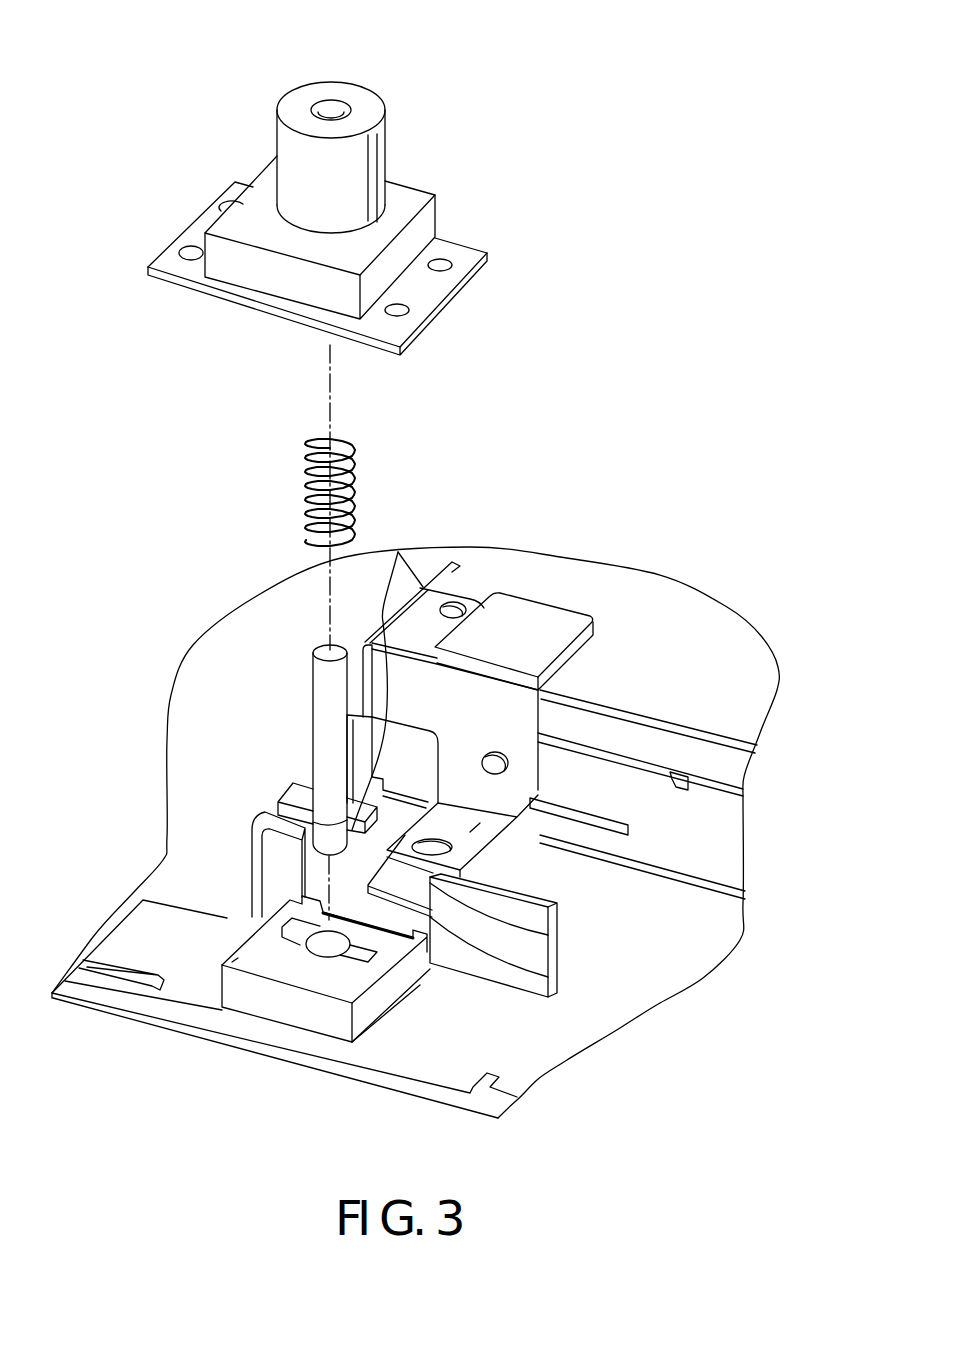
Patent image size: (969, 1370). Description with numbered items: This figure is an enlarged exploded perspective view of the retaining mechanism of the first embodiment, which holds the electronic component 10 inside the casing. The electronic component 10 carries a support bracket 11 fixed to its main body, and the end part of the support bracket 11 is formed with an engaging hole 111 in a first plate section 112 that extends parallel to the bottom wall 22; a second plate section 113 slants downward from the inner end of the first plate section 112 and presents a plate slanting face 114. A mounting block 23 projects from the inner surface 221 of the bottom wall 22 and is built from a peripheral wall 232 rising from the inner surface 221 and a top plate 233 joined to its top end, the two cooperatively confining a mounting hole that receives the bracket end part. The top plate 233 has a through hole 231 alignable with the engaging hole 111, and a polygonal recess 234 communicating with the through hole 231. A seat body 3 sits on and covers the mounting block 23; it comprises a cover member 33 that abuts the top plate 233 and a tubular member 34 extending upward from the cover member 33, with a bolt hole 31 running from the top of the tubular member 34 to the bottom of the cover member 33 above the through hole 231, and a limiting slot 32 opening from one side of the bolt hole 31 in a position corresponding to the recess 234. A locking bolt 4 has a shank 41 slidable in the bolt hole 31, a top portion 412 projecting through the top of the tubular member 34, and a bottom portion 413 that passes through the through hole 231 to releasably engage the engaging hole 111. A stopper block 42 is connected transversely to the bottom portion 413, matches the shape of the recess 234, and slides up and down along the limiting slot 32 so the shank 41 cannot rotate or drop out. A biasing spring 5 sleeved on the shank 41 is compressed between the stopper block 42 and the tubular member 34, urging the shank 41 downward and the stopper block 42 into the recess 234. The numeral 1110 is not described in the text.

The seat body 3 is at (410, 110).
The bolt hole 31 is at (333, 100).
The limiting slot 32 is at (370, 155).
The cover member 33 is at (260, 275).
The tubular member 34 is at (300, 163).
The biasing spring 5 is at (310, 463).
The locking bolt 4 is at (297, 675).
The shank 41 is at (325, 735).
The top portion 412 is at (307, 657).
The bottom portion 413 is at (322, 833).
The stopper block 42 is at (377, 640).
The electronic component 10 is at (675, 610).
The support bracket 11 is at (550, 593).
The engaging hole 111 is at (478, 852).
The first plate section 112 is at (472, 832).
The notch 1110 is at (487, 828).
The second plate section 113 is at (540, 975).
The plate slanting face 114 is at (540, 938).
The bottom wall 22 is at (302, 1082).
The inner surface 221 is at (408, 1045).
The mounting block 23 is at (222, 940).
The through hole 231 is at (245, 967).
The peripheral wall 232 is at (380, 997).
The top plate 233 is at (307, 970).
The recess 234 is at (280, 922).